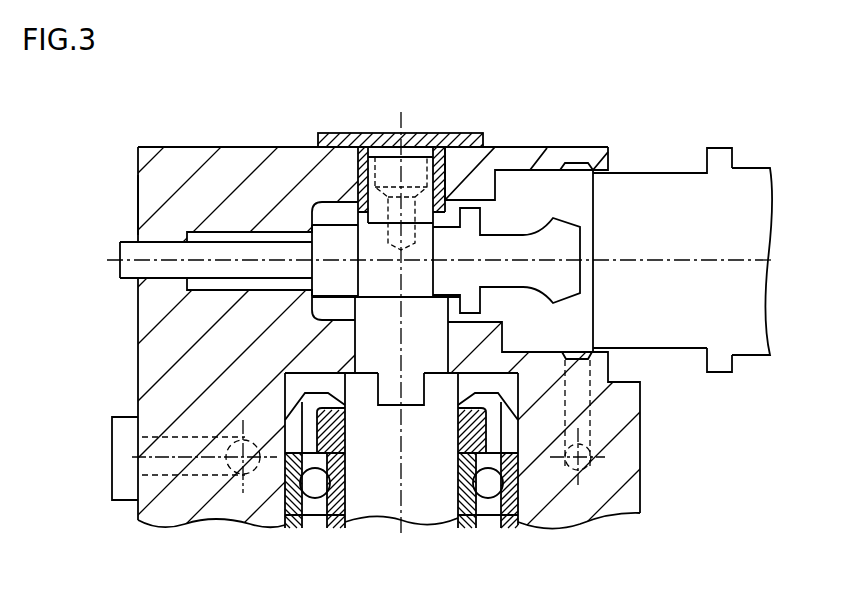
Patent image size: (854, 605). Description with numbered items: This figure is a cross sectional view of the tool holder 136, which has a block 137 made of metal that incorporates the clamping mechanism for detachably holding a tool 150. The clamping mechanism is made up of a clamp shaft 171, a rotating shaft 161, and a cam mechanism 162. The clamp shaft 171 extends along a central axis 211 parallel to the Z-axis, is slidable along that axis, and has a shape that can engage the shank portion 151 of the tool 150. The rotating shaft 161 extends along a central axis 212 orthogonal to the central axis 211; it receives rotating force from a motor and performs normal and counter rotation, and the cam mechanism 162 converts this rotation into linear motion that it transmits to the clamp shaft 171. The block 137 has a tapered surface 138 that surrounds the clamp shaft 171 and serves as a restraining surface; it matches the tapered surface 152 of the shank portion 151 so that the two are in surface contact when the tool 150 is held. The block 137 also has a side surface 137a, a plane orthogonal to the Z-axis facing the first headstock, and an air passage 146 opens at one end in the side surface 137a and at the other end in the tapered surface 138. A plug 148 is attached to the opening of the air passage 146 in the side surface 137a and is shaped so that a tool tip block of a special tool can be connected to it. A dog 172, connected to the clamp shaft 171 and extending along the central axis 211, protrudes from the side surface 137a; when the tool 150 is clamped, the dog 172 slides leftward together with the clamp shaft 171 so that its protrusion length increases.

The tool holder 136 is at (107, 122).
The block 137 is at (249, 155).
The side surface 137a is at (138, 200).
The tapered surface 138 is at (533, 185).
The air passage 146 is at (165, 467).
The plug 148 is at (123, 474).
The tool 150 is at (753, 165).
The shank portion 151 is at (669, 340).
The tapered surface 152 is at (650, 173).
The rotating shaft 161 is at (430, 505).
The cam mechanism 162 is at (370, 349).
The clamp shaft 171 is at (503, 245).
The dog 172 is at (163, 252).
The central axis 211 is at (340, 258).
The central axis 212 is at (398, 490).